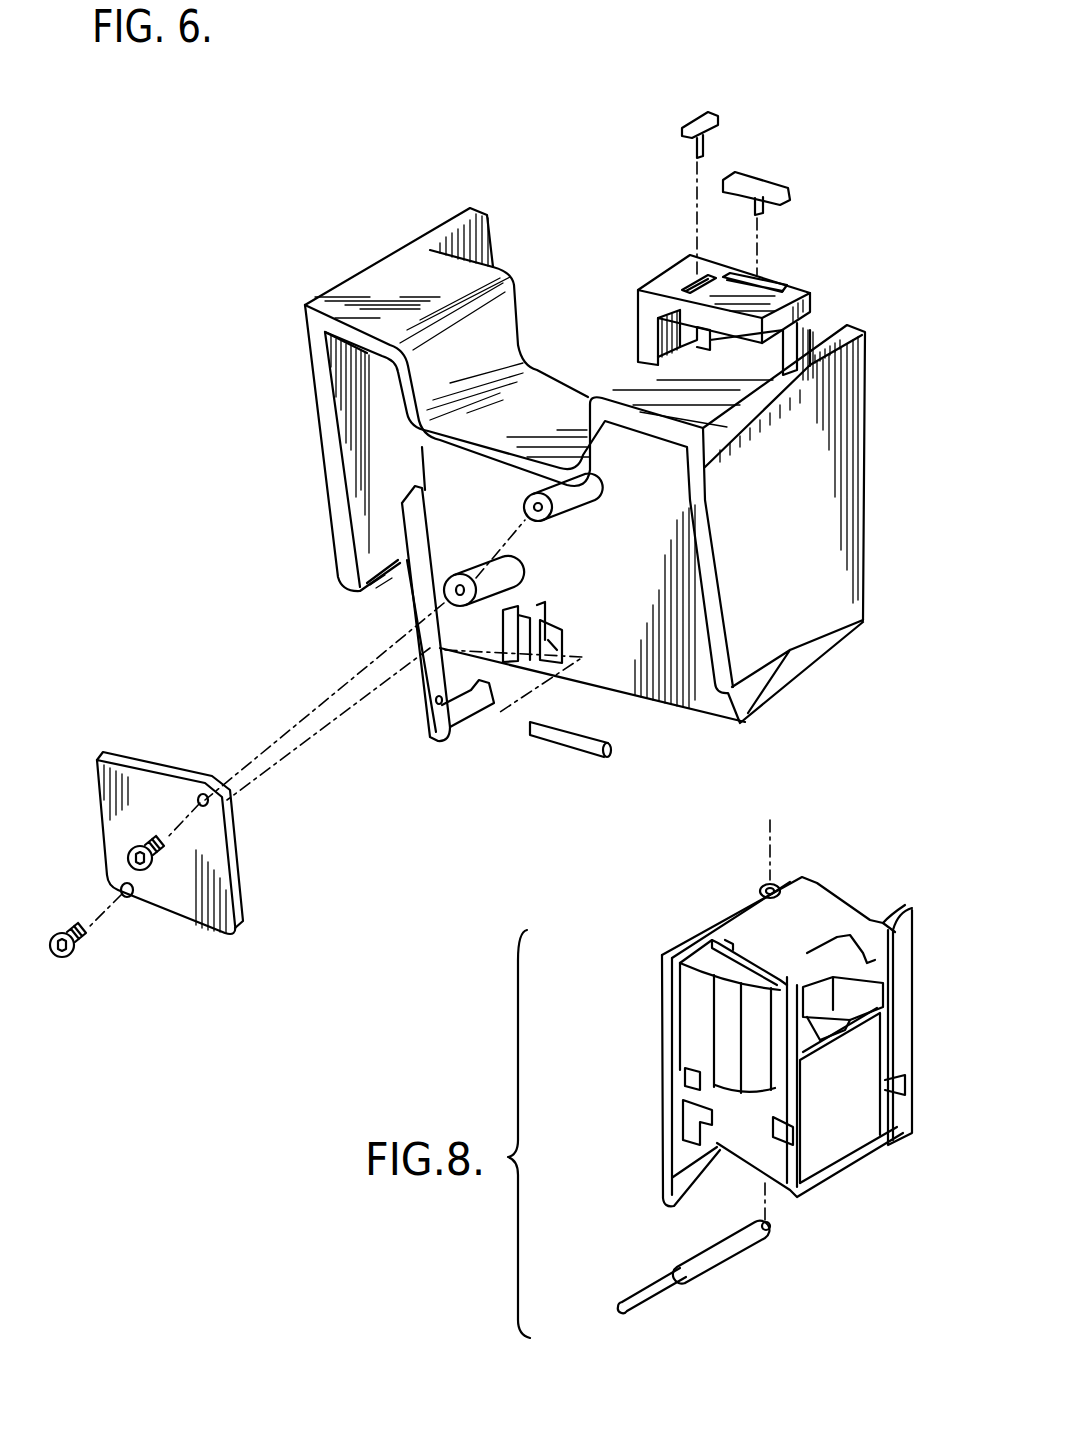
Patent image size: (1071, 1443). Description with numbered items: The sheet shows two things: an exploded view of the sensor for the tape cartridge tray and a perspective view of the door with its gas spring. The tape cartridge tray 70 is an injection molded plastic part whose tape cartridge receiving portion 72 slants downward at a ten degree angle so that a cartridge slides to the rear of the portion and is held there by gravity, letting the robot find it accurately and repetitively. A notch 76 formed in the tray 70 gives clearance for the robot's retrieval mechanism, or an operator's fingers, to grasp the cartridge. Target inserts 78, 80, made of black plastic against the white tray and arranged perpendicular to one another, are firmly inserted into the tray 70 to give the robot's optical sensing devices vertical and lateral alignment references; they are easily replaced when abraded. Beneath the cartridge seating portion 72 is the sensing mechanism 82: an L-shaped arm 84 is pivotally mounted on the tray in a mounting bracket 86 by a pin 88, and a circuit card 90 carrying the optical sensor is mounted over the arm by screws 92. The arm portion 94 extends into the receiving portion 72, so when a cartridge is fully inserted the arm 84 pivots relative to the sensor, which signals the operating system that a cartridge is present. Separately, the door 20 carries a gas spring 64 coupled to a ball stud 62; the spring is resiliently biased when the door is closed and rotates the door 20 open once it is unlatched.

In FIG. 6, the tape cartridge tray 70 is at (345, 270).
In FIG. 6, the tape cartridge receiving portion 72 is at (565, 312).
In FIG. 6, the notch 76 is at (548, 418).
In FIG. 6, the target insert 78 is at (697, 118).
In FIG. 6, the target insert 80 is at (757, 188).
In FIG. 6, the sensing mechanism 82 is at (483, 743).
In FIG. 6, the L-shaped arm 84 is at (430, 742).
In FIG. 6, the mounting bracket 86 is at (545, 668).
In FIG. 6, the pin 88 is at (597, 752).
In FIG. 6, the circuit card 90 is at (232, 905).
In FIG. 6, the screws 92 is at (83, 950).
In FIG. 6, the arm portion 94 is at (490, 705).
In FIG. 8, the door 20 is at (647, 976).
In FIG. 8, the ball stud 62 is at (758, 1177).
In FIG. 8, the gas spring 64 is at (715, 1253).